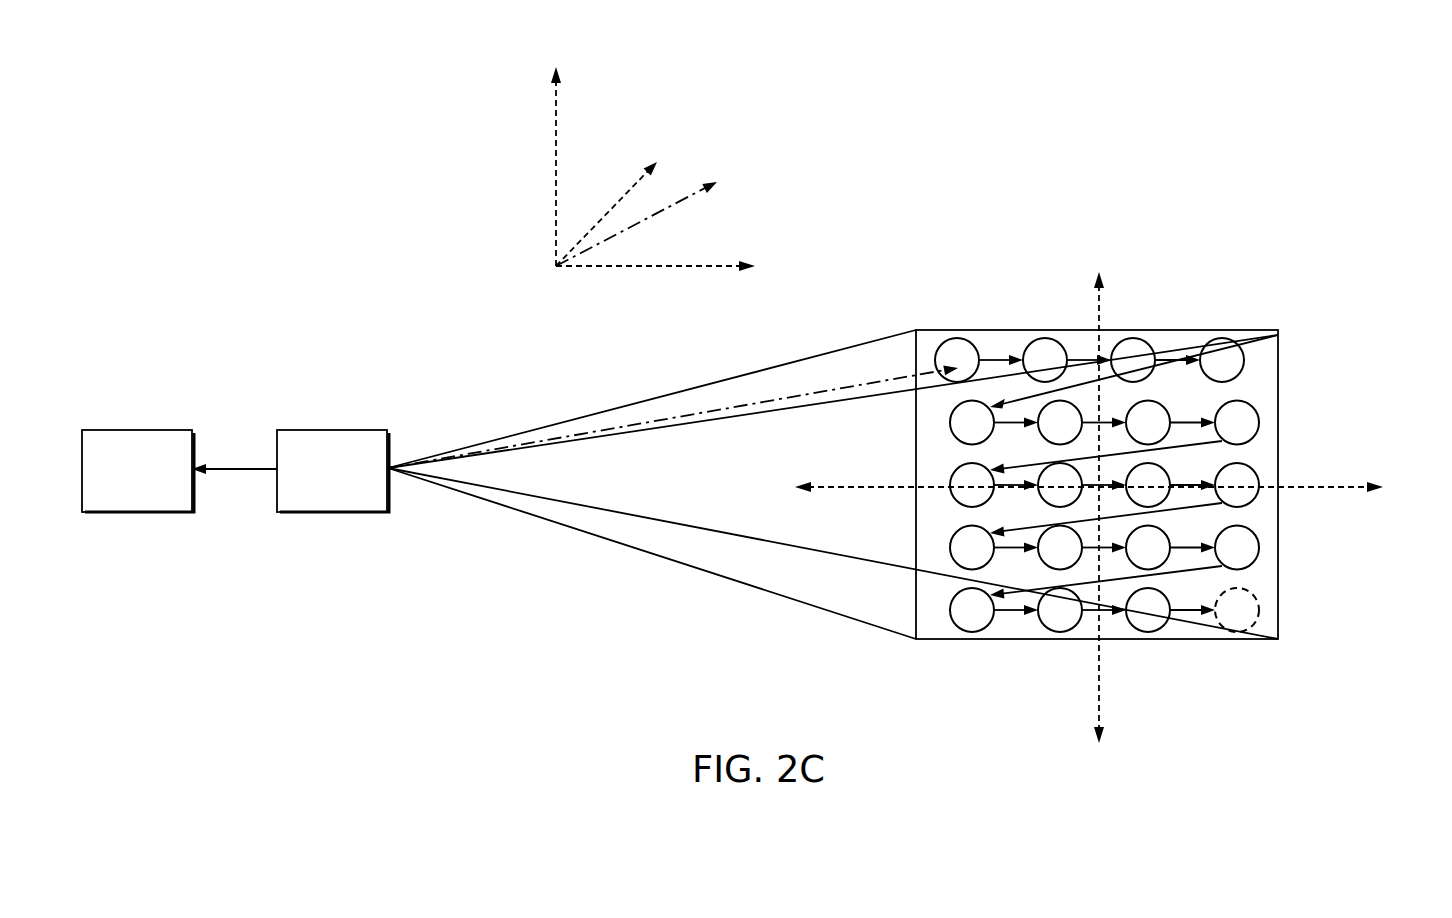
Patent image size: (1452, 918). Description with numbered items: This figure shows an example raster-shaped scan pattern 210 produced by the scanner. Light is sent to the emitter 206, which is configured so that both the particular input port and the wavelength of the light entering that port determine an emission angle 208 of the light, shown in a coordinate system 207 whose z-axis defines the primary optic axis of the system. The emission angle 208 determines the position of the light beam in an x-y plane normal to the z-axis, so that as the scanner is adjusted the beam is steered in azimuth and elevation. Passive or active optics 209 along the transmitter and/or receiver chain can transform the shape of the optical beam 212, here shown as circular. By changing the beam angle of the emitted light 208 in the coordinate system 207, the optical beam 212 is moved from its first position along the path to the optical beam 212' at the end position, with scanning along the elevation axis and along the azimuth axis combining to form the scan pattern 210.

The emitter 206 is at (137, 430).
The coordinate system 207 is at (615, 112).
The emission angle 208 is at (668, 205).
The optics 209 is at (332, 430).
The scan pattern 210 is at (1268, 268).
The optical beam 212 is at (953, 331).
The optical beam at end position 212' is at (1288, 618).